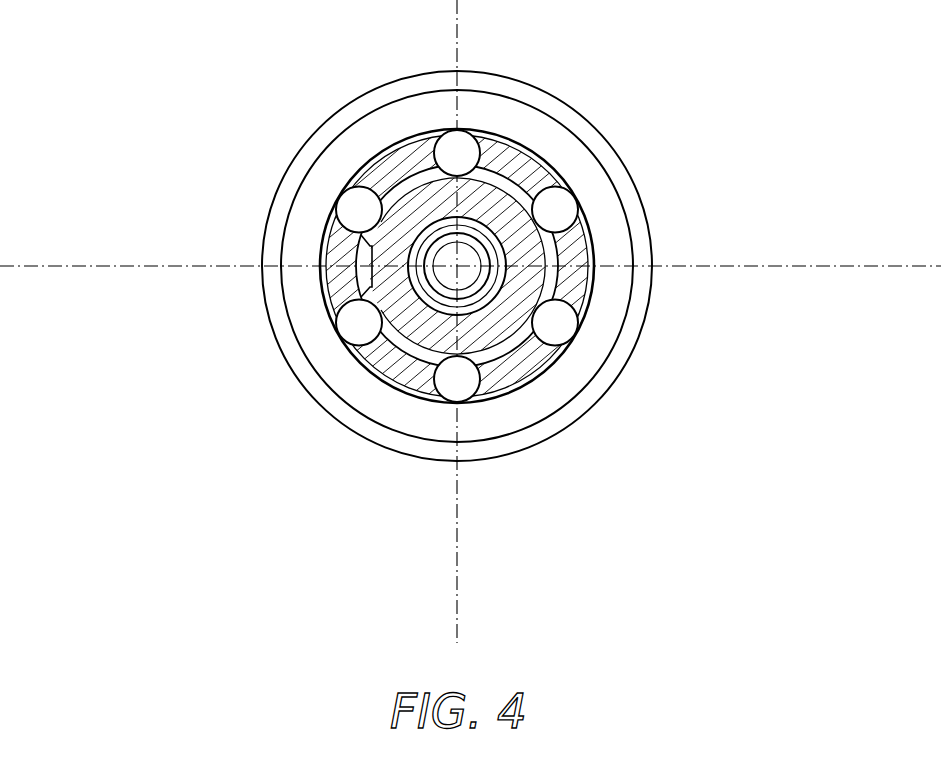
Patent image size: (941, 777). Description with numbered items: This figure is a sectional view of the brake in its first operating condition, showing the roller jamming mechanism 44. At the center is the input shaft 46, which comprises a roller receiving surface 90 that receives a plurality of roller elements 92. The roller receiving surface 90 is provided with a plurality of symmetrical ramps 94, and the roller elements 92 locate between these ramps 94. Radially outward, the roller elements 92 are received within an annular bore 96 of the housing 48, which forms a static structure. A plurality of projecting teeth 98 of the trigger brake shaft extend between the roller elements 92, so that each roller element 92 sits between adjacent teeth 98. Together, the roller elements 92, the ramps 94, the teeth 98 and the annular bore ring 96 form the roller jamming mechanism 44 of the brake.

The roller jamming mechanism 44 is at (726, 222).
The input shaft 46 is at (420, 348).
The housing 48 is at (432, 80).
The roller receiving surface 90 is at (512, 396).
The roller elements 92 is at (460, 147).
The symmetrical ramps 94 is at (372, 186).
The annular bore 96 is at (573, 158).
The projecting teeth 98 is at (410, 157).